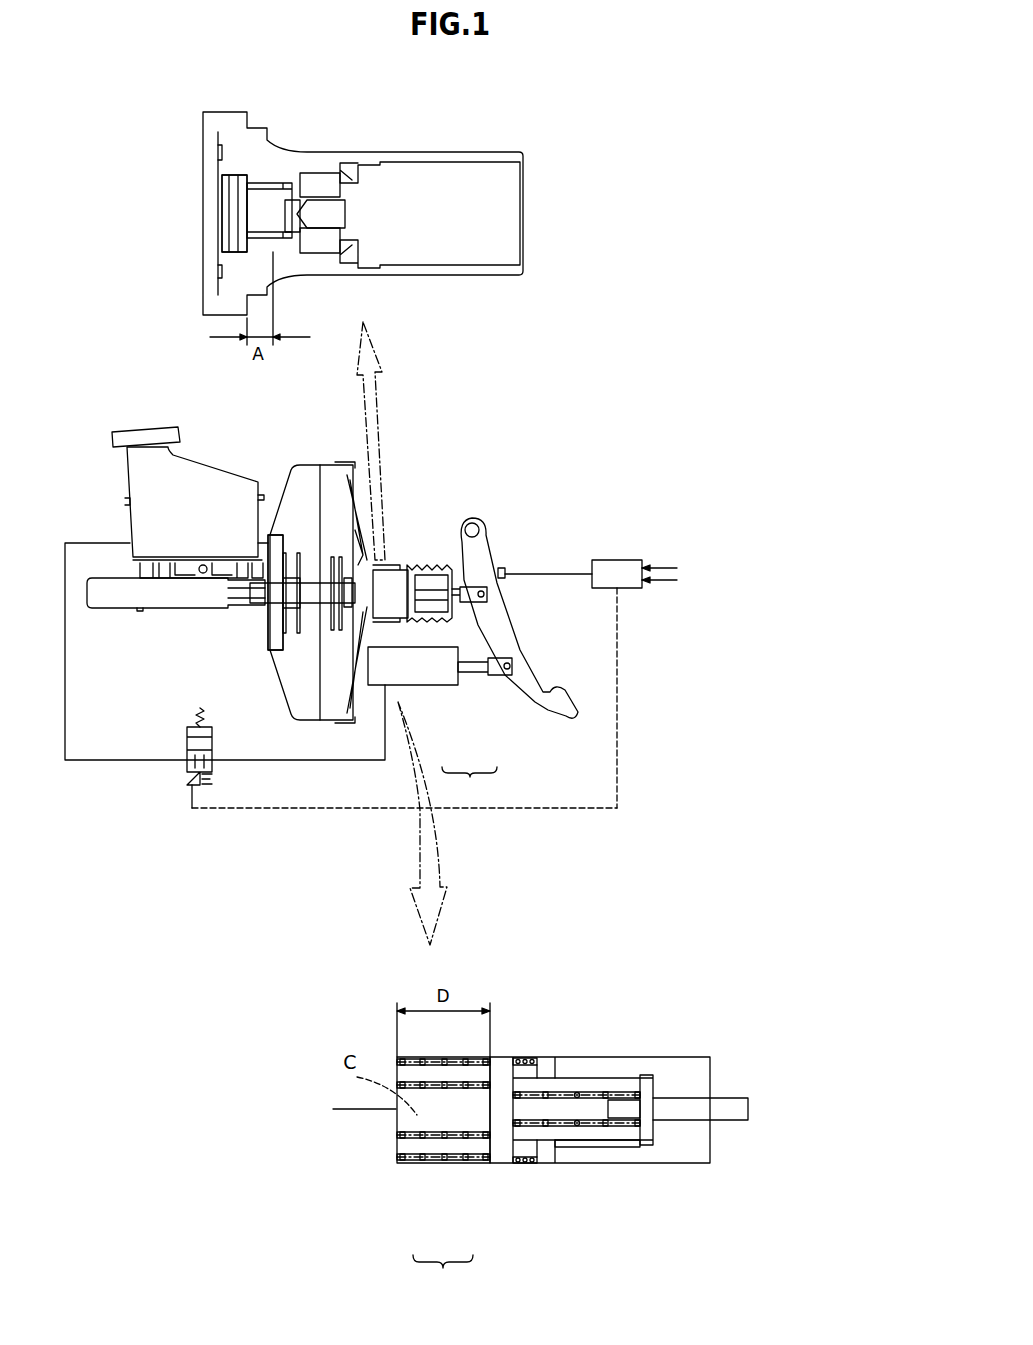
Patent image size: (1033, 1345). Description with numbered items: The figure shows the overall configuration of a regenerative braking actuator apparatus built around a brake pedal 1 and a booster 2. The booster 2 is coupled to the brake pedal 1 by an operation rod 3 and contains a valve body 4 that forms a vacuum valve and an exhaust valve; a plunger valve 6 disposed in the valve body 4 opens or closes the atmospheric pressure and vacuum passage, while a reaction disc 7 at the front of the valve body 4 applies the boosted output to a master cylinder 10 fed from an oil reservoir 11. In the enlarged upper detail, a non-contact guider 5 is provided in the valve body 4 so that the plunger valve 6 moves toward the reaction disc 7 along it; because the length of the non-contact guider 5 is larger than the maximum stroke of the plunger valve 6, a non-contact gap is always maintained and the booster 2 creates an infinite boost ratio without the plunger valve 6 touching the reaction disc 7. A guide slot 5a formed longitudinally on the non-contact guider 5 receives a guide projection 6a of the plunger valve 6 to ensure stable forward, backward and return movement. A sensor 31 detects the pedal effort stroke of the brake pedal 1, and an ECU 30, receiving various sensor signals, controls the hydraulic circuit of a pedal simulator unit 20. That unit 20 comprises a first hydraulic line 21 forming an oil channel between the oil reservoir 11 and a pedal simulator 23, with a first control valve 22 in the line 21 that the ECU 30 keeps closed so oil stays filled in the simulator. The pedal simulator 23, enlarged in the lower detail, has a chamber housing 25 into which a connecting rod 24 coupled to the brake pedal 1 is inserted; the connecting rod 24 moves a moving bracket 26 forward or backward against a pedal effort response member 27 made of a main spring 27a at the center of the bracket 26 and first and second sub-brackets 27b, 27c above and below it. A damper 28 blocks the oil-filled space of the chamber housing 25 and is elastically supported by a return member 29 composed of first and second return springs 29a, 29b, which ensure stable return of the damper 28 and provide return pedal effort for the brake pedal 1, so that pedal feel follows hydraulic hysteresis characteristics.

The brake pedal 1 is at (487, 517).
The booster 2 is at (300, 485).
The operation rod 3 is at (438, 585).
The valve body 4 is at (442, 157).
The non-contact guider 5 is at (257, 200).
The guide slot 5a is at (273, 183).
The plunger valve 6 is at (335, 213).
The guide projection 6a is at (285, 217).
The reaction disc 7 is at (232, 213).
The master cylinder 10 is at (173, 605).
The oil reservoir 11 is at (207, 475).
The pedal simulator unit 20 is at (102, 783).
The first hydraulic line 21 is at (138, 762).
The first control valve 22 is at (213, 770).
The pedal simulator 23 is at (697, 1034).
The connecting rod 24 is at (474, 668).
The chamber housing 25 is at (433, 680).
The moving bracket 26 is at (630, 1148).
The pedal effort response member 27 is at (597, 1022).
The main spring 27a is at (577, 1095).
The first sub-bracket 27b is at (523, 1063).
The second sub-bracket 27c is at (525, 1155).
The damper 28 is at (502, 1062).
The return member 29 is at (443, 1176).
The first return spring 29a is at (418, 1162).
The second return spring 29b is at (443, 1087).
The ECU 30 is at (612, 558).
The sensor 31 is at (505, 568).